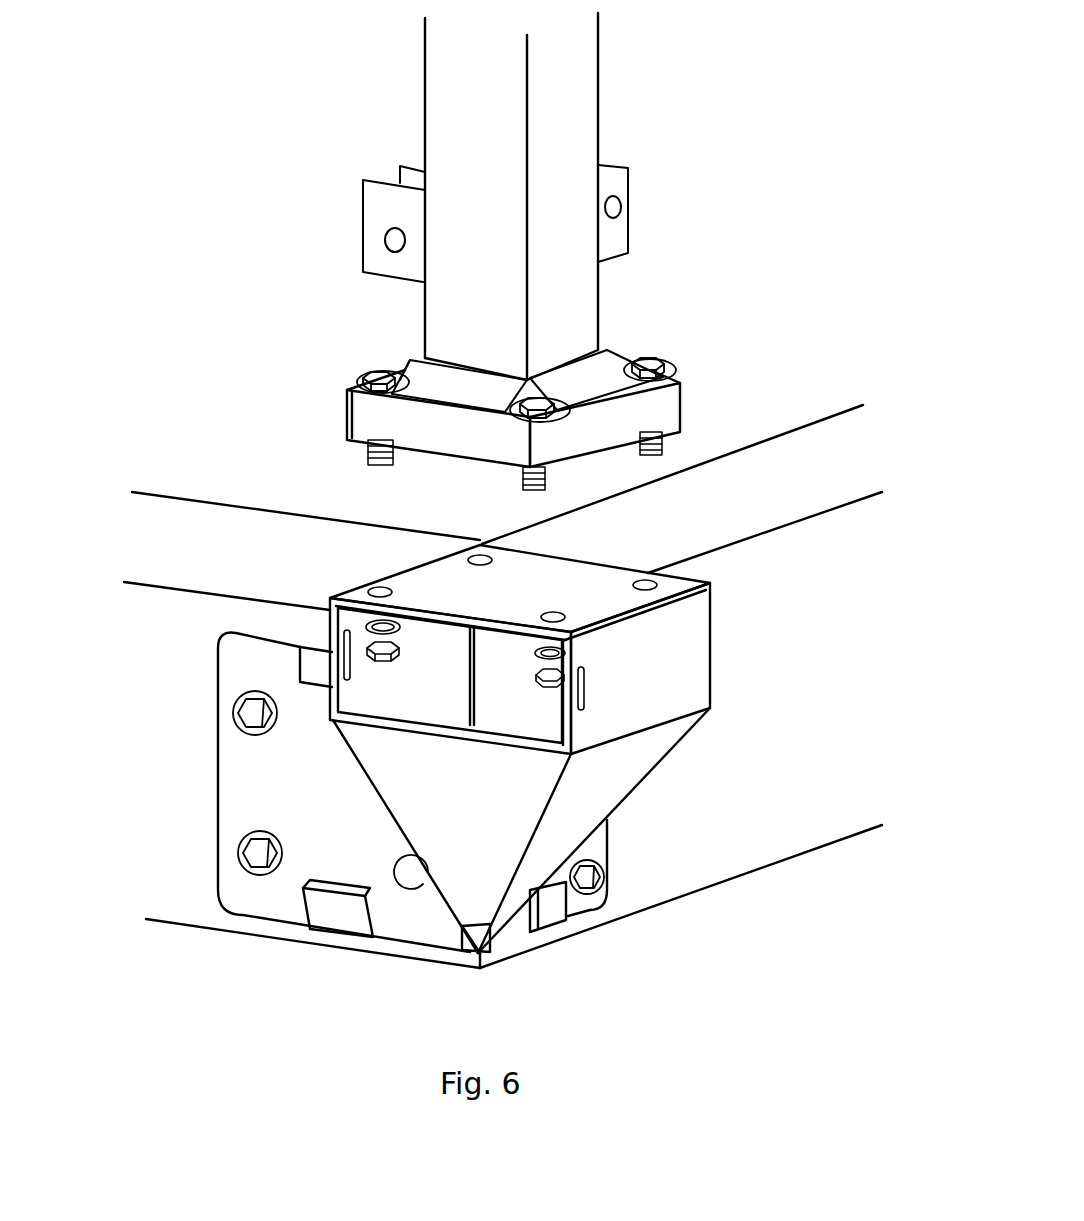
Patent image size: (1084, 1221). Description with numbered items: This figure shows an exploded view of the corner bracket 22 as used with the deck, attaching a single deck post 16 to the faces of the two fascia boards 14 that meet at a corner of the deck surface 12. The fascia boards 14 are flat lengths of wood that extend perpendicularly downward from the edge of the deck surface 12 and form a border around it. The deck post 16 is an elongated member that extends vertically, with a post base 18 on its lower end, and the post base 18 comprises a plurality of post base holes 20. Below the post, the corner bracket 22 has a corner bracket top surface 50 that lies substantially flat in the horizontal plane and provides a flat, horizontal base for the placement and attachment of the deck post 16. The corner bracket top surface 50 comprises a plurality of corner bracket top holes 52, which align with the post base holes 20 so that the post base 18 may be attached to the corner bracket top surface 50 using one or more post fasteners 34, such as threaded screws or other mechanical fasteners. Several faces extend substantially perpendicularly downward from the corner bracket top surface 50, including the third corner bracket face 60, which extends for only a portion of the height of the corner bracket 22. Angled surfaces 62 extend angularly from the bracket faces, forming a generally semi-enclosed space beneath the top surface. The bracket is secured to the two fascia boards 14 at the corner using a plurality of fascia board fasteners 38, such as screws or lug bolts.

The deck surface 12 is at (203, 447).
The fascia boards 14 is at (805, 826).
The deck post 16 is at (573, 117).
The post base 18 is at (660, 408).
The post base holes 20 is at (355, 380).
The corner bracket 22 is at (471, 735).
The post fasteners 34 is at (373, 370).
The fascia board fasteners 38 is at (255, 860).
The corner bracket top surface 50 is at (553, 585).
The corner bracket top holes 52 is at (695, 582).
The third corner bracket face 60 is at (680, 682).
The angled surfaces 62 is at (402, 768).